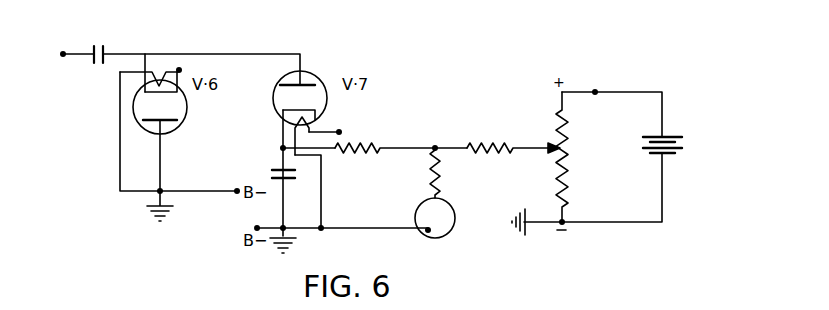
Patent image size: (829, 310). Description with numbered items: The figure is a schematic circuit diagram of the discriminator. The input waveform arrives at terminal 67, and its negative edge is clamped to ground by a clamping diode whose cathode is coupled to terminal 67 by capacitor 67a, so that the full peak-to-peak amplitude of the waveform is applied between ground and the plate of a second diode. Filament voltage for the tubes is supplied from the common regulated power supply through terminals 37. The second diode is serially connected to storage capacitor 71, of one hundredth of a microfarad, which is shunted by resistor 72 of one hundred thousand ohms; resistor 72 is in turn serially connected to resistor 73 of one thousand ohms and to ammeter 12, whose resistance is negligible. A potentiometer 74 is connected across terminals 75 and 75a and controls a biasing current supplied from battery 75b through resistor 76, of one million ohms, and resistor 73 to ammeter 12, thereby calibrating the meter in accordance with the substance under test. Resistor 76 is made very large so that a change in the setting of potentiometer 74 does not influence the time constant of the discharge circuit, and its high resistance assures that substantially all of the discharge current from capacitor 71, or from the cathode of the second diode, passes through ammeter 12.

The terminal 67 is at (76, 36).
The capacitor 67a is at (160, 34).
The terminals 37 is at (180, 68).
The storage capacitor 71 is at (301, 170).
The resistor 72 is at (364, 143).
The resistor 73 is at (440, 185).
The ammeter 12 is at (436, 238).
The resistor 76 is at (495, 143).
The potentiometer 74 is at (569, 165).
The terminal 75 is at (597, 90).
The terminal 75a is at (642, 247).
The battery 75b is at (667, 133).